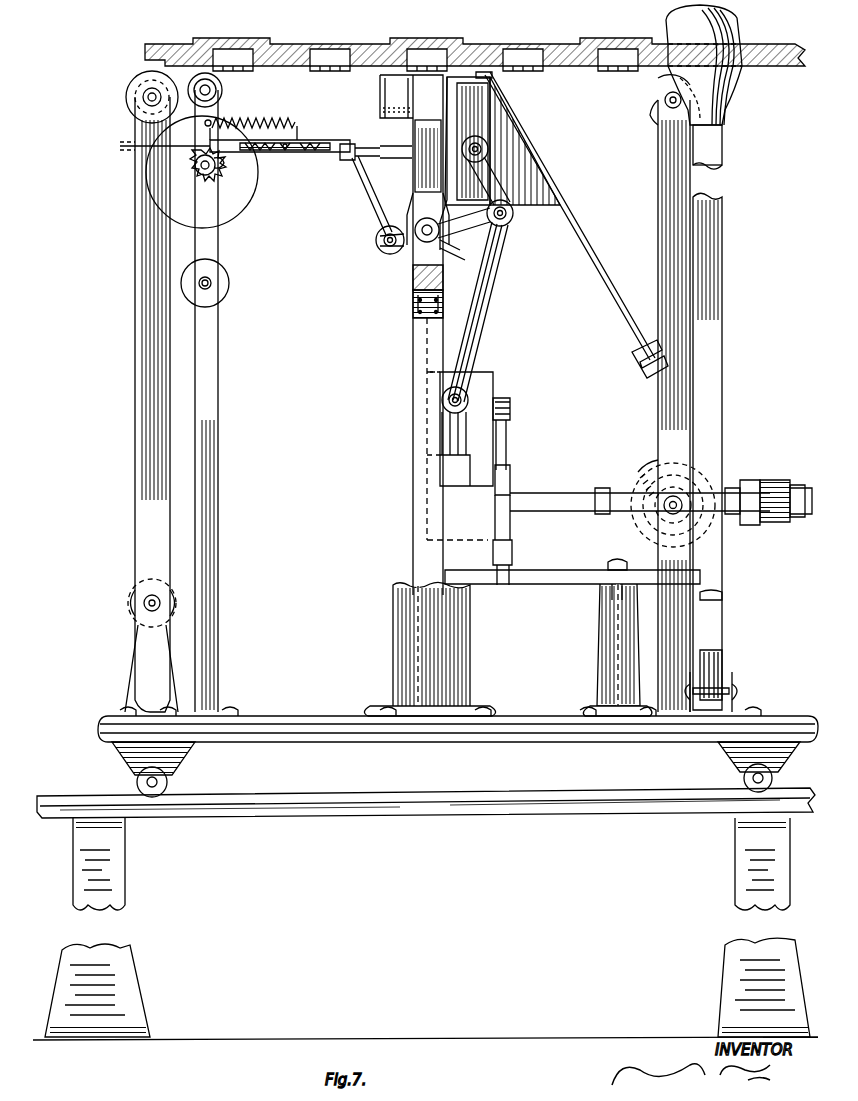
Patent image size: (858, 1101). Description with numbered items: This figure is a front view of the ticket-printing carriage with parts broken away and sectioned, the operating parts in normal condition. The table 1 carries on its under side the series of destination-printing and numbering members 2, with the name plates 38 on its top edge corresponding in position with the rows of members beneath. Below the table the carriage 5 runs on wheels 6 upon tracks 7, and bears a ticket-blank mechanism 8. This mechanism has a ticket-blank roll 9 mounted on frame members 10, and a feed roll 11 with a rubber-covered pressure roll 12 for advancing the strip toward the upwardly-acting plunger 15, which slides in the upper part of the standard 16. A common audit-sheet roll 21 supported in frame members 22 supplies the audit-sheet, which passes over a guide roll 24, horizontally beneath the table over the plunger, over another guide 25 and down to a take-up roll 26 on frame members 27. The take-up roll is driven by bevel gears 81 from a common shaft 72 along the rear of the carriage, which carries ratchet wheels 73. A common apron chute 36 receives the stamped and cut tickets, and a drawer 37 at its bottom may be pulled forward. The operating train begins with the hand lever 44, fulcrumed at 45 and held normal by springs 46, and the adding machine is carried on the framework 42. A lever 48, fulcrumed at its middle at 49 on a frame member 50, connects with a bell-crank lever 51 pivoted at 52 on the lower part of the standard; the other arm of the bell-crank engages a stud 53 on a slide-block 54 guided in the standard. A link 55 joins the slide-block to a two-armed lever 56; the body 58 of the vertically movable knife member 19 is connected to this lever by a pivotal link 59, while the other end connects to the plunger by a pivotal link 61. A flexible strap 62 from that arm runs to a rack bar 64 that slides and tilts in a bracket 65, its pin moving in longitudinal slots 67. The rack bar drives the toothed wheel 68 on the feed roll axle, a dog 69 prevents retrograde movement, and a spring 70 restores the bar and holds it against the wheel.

The table 1 is at (145, 53).
The destination-printing and numbering members 2 is at (405, 57).
The name plates 38 is at (600, 38).
The hand levers 44 is at (720, 93).
The guide roll 24 is at (126, 100).
The rubber-covered pressure roll 12 is at (207, 72).
The frame members 22 is at (145, 460).
The frame members 10 is at (216, 568).
The audit-sheet roll 21 is at (132, 598).
The ticket-blank roll 9 is at (222, 290).
The feed roll 11 is at (256, 194).
The toothed wheel 68 is at (214, 175).
The dog 69 is at (224, 165).
The rack bar 64 is at (222, 138).
The longitudinal slots 67 is at (306, 140).
The spring 70 is at (251, 116).
The bracket 65 is at (346, 142).
The plunger 15 is at (425, 175).
The pivotal link 61 is at (395, 165).
The flexible strap 62 is at (376, 220).
The standard 16 is at (418, 540).
The ticket-blank mechanism 8 is at (370, 297).
The body of knife member 58 is at (476, 120).
The vertically movable knife member 19 is at (490, 75).
The apron chute 36 is at (590, 252).
The drawer 37 is at (642, 345).
The pivotal link 59 is at (490, 185).
The two-armed lever 56 is at (450, 245).
The link 55 is at (492, 297).
The slide-block 54 is at (450, 435).
The stud 53 is at (510, 410).
The pivot 52 is at (510, 470).
The bell-crank lever 51 is at (508, 552).
The common shaft 72 is at (590, 512).
The ratchet wheels 73 is at (772, 480).
The take-up roll 26 is at (655, 470).
The bevel gears 81 is at (640, 466).
The frame members 27 is at (660, 398).
The guide 25 is at (655, 100).
The lever 48 is at (552, 586).
The fulcrum 49 is at (612, 567).
The frame member 50 is at (604, 636).
The framework 42 is at (408, 672).
The springs 46 is at (723, 663).
The fulcrums 45 is at (732, 690).
The carriage 5 is at (258, 718).
The wheels 6 is at (175, 782).
The tracks 7 is at (252, 796).